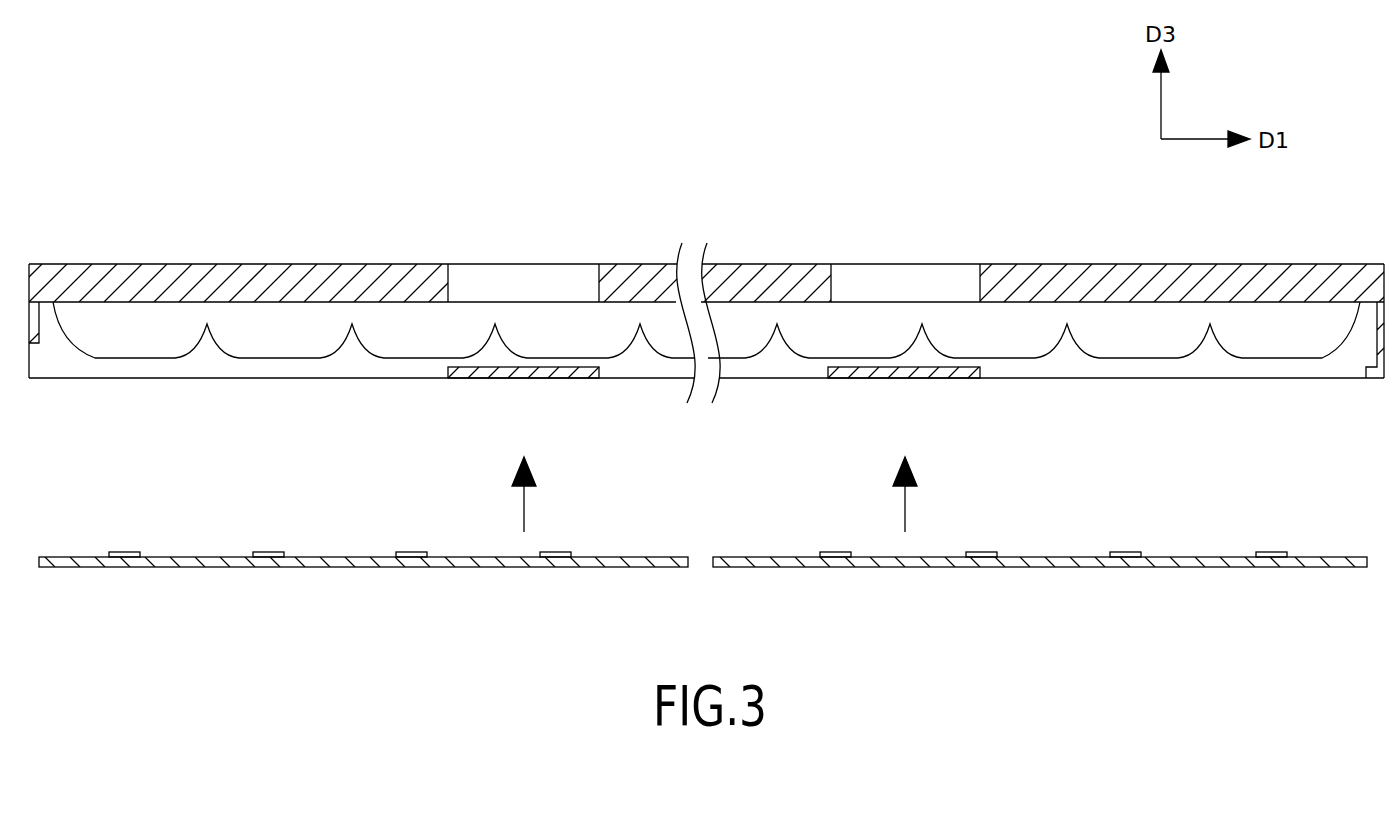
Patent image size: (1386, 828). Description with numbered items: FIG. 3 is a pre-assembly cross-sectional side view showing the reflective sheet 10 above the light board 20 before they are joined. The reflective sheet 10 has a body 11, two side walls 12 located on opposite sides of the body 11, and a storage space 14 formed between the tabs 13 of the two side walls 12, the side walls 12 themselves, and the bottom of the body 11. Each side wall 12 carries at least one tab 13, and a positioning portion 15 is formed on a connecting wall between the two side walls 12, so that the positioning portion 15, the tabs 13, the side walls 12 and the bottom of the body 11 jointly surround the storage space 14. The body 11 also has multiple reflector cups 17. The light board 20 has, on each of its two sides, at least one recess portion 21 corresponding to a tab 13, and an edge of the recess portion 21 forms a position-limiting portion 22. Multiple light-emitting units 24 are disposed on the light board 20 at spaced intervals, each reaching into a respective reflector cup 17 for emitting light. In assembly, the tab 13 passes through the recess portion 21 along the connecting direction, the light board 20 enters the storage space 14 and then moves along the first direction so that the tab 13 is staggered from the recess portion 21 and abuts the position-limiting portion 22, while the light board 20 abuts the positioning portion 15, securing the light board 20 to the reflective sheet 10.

The reflective sheet 10 is at (208, 244).
The body 11 is at (128, 358).
The side walls 12 is at (346, 378).
The tab 13 is at (557, 378).
The storage space 14 is at (218, 373).
The positioning portion 15 is at (1380, 370).
The reflector cups 17 is at (1130, 325).
The light board 20 is at (691, 552).
The recess portion 21 is at (513, 560).
The position-limiting portion 22 is at (440, 560).
The light-emitting units 24 is at (262, 550).